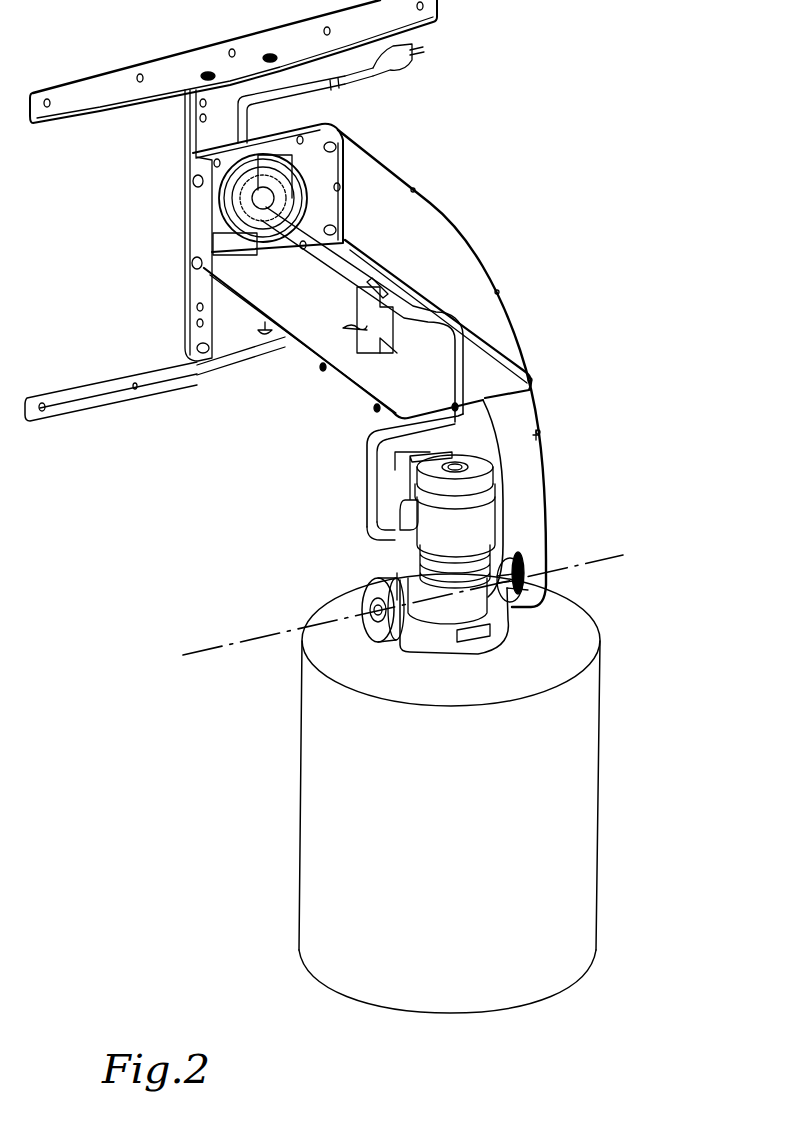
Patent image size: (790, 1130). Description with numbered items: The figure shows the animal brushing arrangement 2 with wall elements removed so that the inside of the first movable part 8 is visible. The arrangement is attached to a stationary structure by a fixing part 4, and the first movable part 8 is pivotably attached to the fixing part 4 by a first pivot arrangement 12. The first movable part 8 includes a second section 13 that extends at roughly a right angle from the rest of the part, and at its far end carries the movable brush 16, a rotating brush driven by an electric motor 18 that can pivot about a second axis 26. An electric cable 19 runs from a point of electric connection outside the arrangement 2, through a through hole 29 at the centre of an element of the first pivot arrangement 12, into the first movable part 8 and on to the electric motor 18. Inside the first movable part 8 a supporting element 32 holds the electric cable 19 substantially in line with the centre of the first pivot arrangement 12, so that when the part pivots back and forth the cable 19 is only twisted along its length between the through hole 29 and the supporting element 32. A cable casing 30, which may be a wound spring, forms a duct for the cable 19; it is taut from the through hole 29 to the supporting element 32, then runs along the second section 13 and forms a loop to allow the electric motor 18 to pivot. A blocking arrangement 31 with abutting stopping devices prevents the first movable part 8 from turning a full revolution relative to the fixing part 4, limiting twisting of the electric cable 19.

The animal brushing arrangement 2 is at (646, 161).
The fixing part 4 is at (201, 146).
The first movable part 8 is at (443, 240).
The first pivot arrangement 12 is at (221, 206).
The second section 13 is at (530, 468).
The movable brush 16 is at (266, 840).
The electric motor 18 is at (473, 527).
The electric cable 19 is at (372, 72).
The second axis 26 is at (217, 648).
The through hole 29 is at (297, 214).
The cable casing 30 is at (460, 344).
The blocking arrangement 31 is at (153, 271).
The supporting element 32 is at (353, 333).